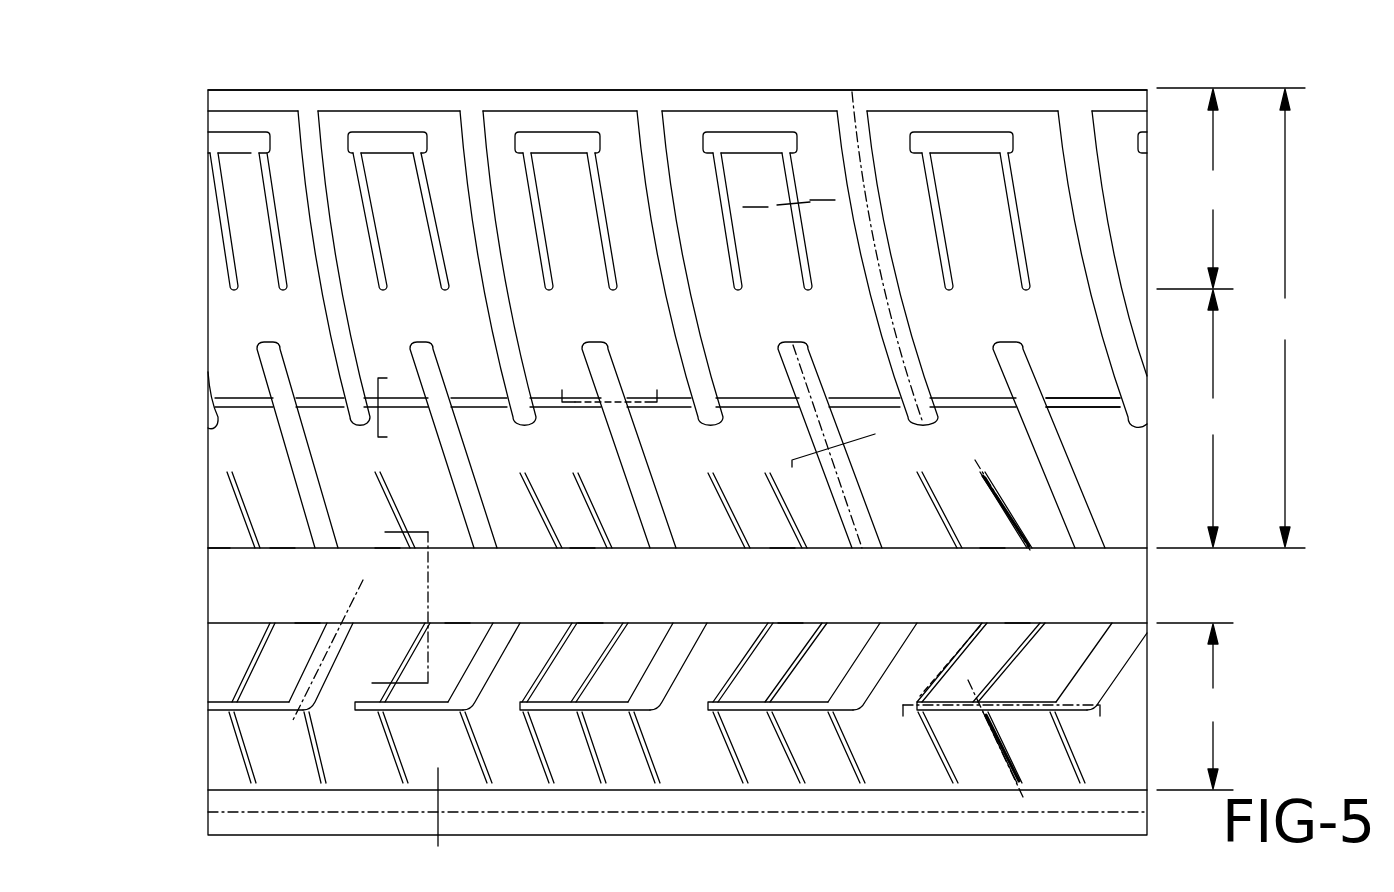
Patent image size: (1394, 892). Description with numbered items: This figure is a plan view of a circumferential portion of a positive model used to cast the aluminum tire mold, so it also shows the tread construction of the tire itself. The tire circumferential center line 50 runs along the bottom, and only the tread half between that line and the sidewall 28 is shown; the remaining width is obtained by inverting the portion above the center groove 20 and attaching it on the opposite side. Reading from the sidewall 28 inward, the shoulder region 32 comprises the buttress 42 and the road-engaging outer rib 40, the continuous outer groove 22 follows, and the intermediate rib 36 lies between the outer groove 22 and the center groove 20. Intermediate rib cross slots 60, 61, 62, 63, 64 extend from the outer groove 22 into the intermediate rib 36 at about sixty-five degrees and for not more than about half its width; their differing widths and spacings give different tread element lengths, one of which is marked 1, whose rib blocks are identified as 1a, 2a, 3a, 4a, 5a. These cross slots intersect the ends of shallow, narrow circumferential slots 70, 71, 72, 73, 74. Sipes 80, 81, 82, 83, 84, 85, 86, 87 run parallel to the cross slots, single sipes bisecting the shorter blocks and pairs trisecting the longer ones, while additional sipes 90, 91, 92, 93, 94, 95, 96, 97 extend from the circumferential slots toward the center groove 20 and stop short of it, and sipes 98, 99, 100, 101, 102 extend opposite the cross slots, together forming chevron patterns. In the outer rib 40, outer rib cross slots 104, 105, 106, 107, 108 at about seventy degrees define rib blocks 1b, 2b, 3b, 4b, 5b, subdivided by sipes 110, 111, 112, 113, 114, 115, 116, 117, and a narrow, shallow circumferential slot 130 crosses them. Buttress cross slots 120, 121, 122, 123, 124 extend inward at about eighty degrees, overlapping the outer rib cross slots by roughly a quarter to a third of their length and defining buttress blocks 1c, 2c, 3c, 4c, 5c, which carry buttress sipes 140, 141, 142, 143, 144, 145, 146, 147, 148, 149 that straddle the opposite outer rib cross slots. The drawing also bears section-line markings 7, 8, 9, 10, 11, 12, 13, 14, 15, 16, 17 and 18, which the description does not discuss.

The tread element length 1 is at (222, 548).
The rib block 1a is at (308, 623).
The rib block 1b is at (282, 548).
The buttress block 1c is at (232, 110).
The rib block 2a is at (459, 623).
The rib block 2b is at (388, 548).
The buttress block 2c is at (405, 111).
The rib block 3a is at (591, 623).
The rib block 3b is at (582, 548).
The buttress block 3c is at (566, 111).
The rib block 4a is at (790, 623).
The rib block 4b is at (783, 548).
The buttress block 4c is at (753, 110).
The rib block 5a is at (1017, 623).
The rib block 5b is at (993, 548).
The buttress block 5c is at (963, 110).
The section line 7- 7 is at (1003, 725).
The section line 8- 8 is at (791, 190).
The section line 9- 9 is at (451, 812).
The section line 10- 10 is at (384, 607).
The section line 11- 11 is at (836, 436).
The section line 12- 12 is at (363, 577).
The section line 13- 13 is at (400, 406).
The section line 14- 14 is at (611, 383).
The section line 15- 15 is at (790, 336).
The section line 16- 16 is at (850, 78).
The section line 17- 17 is at (972, 456).
The section line 18- 18 is at (982, 620).
The center groove 20 is at (190, 830).
The outer groove 22 is at (213, 610).
The tire sidewall 28 is at (364, 90).
The shoulder region 32 is at (1284, 318).
The intermediate rib 36 is at (1195, 706).
The outer rib 40 is at (1231, 419).
The buttress 42 is at (1231, 188).
The circumferential center line 50 is at (210, 795).
The intermediate rib cross slot 60 is at (343, 636).
The intermediate rib cross slot 61 is at (497, 636).
The intermediate rib cross slot 62 is at (690, 636).
The intermediate rib cross slot 63 is at (893, 637).
The intermediate rib cross slot 64 is at (1117, 637).
The circumferential slot 70 is at (273, 702).
The circumferential slot 71 is at (441, 702).
The circumferential slot 72 is at (617, 702).
The circumferential slot 73 is at (817, 702).
The circumferential slot 74 is at (1041, 702).
The sipe 80 is at (263, 635).
The sipe 81 is at (418, 634).
The sipe 82 is at (565, 633).
The sipe 83 is at (614, 638).
The sipe 84 is at (760, 633).
The sipe 85 is at (815, 633).
The sipe 86 is at (956, 652).
The sipe 87 is at (1038, 625).
The additional sipe 90 is at (254, 783).
The additional sipe 91 is at (393, 749).
The additional sipe 92 is at (535, 752).
The additional sipe 93 is at (598, 773).
The additional sipe 94 is at (724, 752).
The additional sipe 95 is at (793, 773).
The additional sipe 96 is at (936, 752).
The additional sipe 97 is at (1010, 773).
The additional sipe 98 is at (322, 773).
The additional sipe 99 is at (482, 772).
The additional sipe 100 is at (644, 742).
The additional sipe 101 is at (859, 786).
The additional sipe 102 is at (1078, 782).
The outer rib cross slot 104 is at (315, 515).
The outer rib cross slot 105 is at (477, 540).
The outer rib cross slot 106 is at (662, 527).
The outer rib cross slot 107 is at (817, 400).
The outer rib cross slot 108 is at (1077, 477).
The sipe 110 is at (240, 492).
The sipe 111 is at (388, 514).
The sipe 112 is at (530, 493).
The sipe 113 is at (571, 473).
The sipe 114 is at (720, 493).
The sipe 115 is at (767, 473).
The sipe 116 is at (947, 528).
The sipe 117 is at (1006, 520).
The buttress cross slot 120 is at (312, 115).
The buttress cross slot 121 is at (473, 115).
The buttress cross slot 122 is at (655, 115).
The buttress cross slot 123 is at (858, 117).
The buttress cross slot 124 is at (1075, 115).
The circumferential slot 130 is at (1066, 396).
The buttress sipe 140 is at (227, 262).
The buttress sipe 141 is at (277, 248).
The buttress sipe 142 is at (371, 248).
The buttress sipe 143 is at (436, 240).
The buttress sipe 144 is at (539, 250).
The buttress sipe 145 is at (607, 238).
The buttress sipe 146 is at (726, 238).
The buttress sipe 147 is at (802, 238).
The buttress sipe 148 is at (938, 248).
The buttress sipe 149 is at (1020, 238).